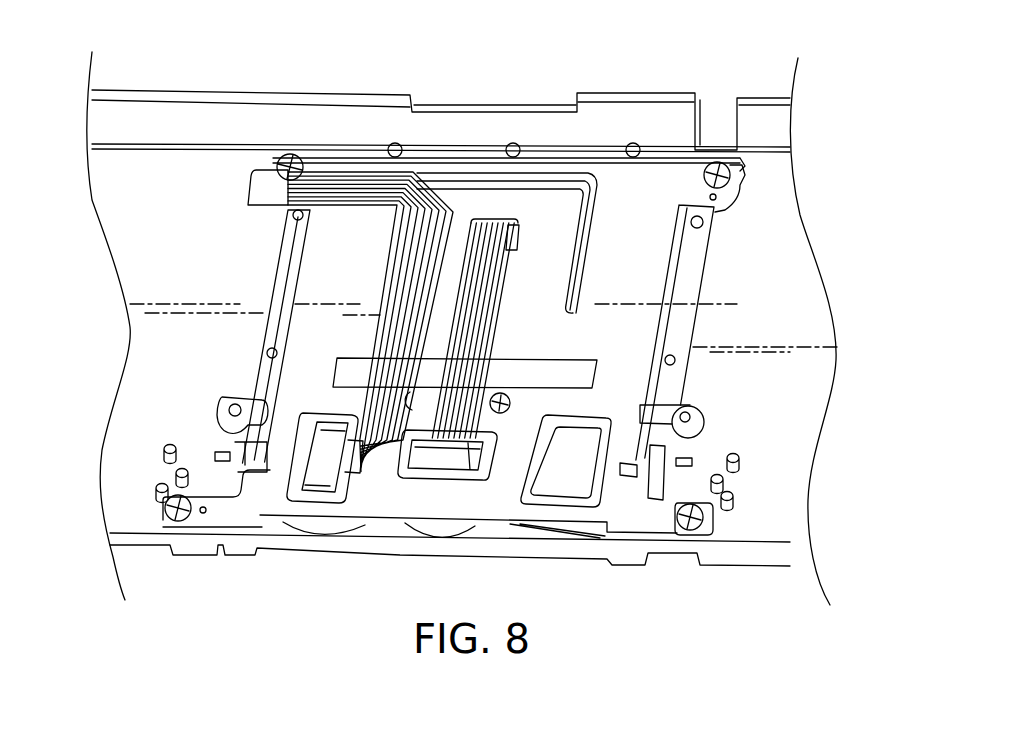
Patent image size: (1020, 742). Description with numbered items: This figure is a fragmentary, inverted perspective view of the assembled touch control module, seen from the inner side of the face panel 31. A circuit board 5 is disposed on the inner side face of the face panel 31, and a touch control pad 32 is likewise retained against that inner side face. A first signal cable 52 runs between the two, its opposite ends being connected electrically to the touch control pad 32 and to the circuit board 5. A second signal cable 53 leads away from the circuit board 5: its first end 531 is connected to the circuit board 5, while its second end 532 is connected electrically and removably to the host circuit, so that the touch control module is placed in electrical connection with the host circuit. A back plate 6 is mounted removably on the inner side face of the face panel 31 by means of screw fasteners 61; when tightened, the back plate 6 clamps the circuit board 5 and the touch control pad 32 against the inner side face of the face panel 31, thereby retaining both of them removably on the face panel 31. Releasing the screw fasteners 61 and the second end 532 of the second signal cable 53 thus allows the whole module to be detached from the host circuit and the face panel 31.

The circuit board 5 is at (573, 457).
The back plate 6 is at (327, 290).
The face panel 31 is at (768, 503).
The touch control pad 32 is at (548, 267).
The first signal cable 52 is at (485, 340).
The second signal cable 53 is at (378, 450).
The first end 531 is at (320, 460).
The second end 532 is at (265, 186).
The screw fasteners 61 is at (727, 182).